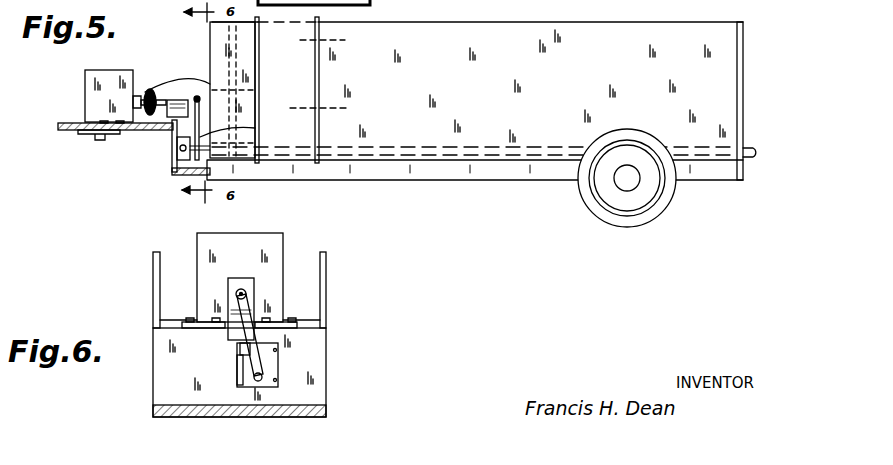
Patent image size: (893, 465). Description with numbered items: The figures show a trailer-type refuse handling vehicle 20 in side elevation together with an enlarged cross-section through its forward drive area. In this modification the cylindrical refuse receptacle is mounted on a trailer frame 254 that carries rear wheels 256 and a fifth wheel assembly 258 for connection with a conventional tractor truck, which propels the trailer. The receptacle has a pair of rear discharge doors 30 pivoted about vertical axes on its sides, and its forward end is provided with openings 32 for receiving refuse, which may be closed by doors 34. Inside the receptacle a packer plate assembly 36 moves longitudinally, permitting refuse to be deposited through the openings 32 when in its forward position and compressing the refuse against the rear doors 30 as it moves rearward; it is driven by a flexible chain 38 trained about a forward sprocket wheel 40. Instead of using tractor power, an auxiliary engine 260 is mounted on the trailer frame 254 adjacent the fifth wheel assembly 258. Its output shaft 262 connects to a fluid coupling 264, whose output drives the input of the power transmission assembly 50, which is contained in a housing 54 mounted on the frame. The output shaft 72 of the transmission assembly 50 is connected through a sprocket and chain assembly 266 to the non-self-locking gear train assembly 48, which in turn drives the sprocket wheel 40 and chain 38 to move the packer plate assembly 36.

In FIG. 5, the trailer 20 is at (557, 35).
In FIG. 5, the rear discharge doors 30 is at (743, 88).
In FIG. 5, the openings 32 is at (324, 80).
In FIG. 5, the doors 34 is at (330, 72).
In FIG. 5, the packer plate assembly 36 is at (211, 60).
In FIG. 5, the flexible chain 38 is at (186, 175).
In FIG. 5, the forward sprocket wheel 40 is at (175, 156).
In FIG. 5, the gear train assembly 48 is at (174, 134).
In FIG. 6, the gear train assembly 48 is at (265, 365).
In FIG. 5, the power transmission assembly 50 is at (190, 90).
In FIG. 6, the power transmission assembly 50 is at (255, 290).
In FIG. 5, the housing 54 is at (378, 2).
In FIG. 6, the output shaft 72 is at (234, 298).
In FIG. 5, the trailer frame 254 is at (393, 170).
In FIG. 6, the trailer frame 254 is at (222, 413).
In FIG. 5, the rear wheels 256 is at (595, 198).
In FIG. 5, the fifth wheel assembly 258 is at (78, 128).
In FIG. 5, the auxiliary engine 260 is at (88, 82).
In FIG. 6, the auxiliary engine 260 is at (270, 248).
In FIG. 5, the output shaft 262 is at (132, 94).
In FIG. 5, the fluid coupling 264 is at (154, 94).
In FIG. 5, the sprocket and chain assembly 266 is at (253, 132).
In FIG. 6, the sprocket and chain assembly 266 is at (238, 344).